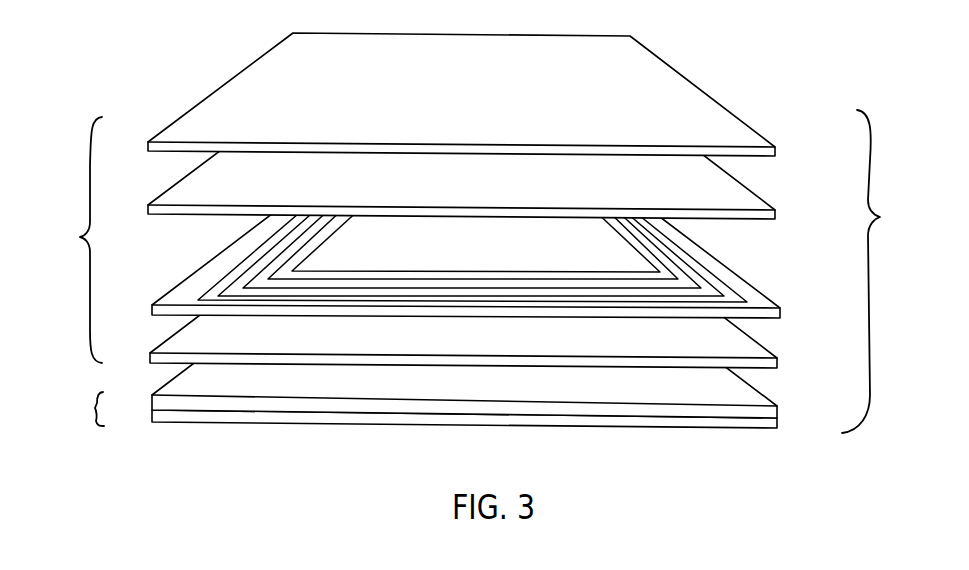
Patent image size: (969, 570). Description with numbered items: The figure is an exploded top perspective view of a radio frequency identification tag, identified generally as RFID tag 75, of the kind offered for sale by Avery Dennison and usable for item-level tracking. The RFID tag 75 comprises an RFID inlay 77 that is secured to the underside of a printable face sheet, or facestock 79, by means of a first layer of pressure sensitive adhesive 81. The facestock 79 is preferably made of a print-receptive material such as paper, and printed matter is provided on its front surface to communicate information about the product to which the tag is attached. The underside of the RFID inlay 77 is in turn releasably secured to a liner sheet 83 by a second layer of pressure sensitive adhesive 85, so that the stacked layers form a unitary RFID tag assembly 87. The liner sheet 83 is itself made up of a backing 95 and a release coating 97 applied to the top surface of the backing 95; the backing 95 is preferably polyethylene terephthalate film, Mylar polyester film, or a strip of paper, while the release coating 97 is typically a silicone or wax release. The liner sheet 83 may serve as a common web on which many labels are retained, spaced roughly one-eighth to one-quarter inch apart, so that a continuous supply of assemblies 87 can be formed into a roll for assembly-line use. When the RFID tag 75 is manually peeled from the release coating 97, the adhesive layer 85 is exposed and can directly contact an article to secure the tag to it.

The RFID tag 75 is at (68, 257).
The RFID inlay 77 is at (146, 304).
The printable face sheet 79 is at (711, 102).
The first layer of pressure sensitive adhesive 81 is at (775, 210).
The liner sheet 83 is at (70, 424).
The second layer of pressure sensitive adhesive 85 is at (777, 360).
The RFID tag assembly 87 is at (905, 242).
The backing 95 is at (768, 426).
The release coating 97 is at (777, 408).